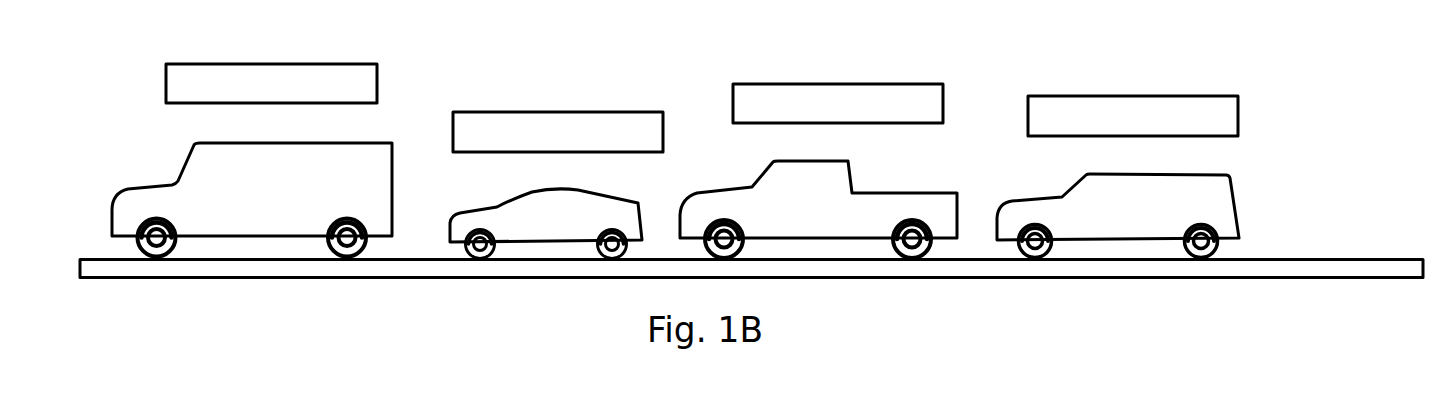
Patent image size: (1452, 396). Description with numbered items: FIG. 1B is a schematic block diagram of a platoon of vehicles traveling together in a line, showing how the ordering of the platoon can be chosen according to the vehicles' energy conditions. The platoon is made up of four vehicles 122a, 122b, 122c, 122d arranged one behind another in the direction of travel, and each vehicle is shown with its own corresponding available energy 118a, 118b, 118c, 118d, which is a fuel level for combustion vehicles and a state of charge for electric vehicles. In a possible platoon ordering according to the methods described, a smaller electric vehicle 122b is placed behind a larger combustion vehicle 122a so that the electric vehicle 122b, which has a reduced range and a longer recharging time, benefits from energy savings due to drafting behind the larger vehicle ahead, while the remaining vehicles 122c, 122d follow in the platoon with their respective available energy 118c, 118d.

The available energy 118a is at (358, 96).
The available energy 118b is at (628, 144).
The available energy 118c is at (925, 115).
The available energy 118d is at (1203, 128).
The vehicle 122a is at (278, 202).
The vehicle 122b is at (572, 229).
The vehicle 122c is at (845, 211).
The vehicle 122d is at (1145, 217).